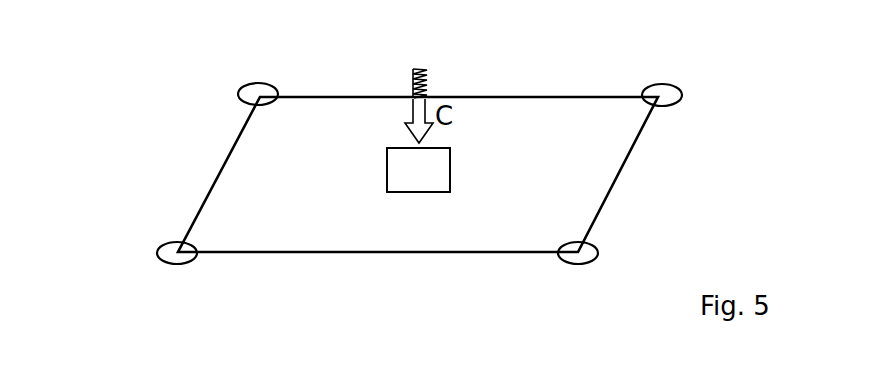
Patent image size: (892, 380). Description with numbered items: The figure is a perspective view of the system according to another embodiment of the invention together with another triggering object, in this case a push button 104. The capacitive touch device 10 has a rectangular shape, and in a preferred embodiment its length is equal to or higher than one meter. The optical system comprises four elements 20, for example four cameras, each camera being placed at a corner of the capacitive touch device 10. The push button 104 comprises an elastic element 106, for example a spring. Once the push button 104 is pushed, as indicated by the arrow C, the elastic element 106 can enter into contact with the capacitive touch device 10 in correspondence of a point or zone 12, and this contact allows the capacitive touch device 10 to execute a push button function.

The capacitive touch device 10 is at (555, 118).
The elements of the optical system 20 is at (266, 92).
The push button 104 is at (452, 157).
The elastic element 106 is at (435, 172).
The point or zone 12 is at (418, 193).